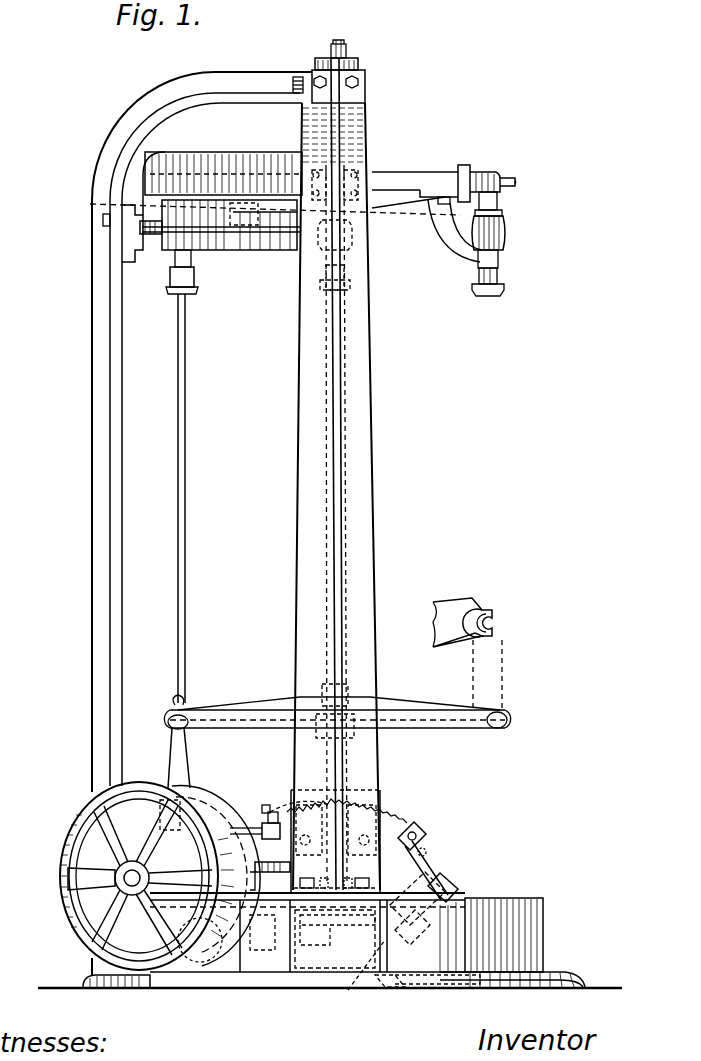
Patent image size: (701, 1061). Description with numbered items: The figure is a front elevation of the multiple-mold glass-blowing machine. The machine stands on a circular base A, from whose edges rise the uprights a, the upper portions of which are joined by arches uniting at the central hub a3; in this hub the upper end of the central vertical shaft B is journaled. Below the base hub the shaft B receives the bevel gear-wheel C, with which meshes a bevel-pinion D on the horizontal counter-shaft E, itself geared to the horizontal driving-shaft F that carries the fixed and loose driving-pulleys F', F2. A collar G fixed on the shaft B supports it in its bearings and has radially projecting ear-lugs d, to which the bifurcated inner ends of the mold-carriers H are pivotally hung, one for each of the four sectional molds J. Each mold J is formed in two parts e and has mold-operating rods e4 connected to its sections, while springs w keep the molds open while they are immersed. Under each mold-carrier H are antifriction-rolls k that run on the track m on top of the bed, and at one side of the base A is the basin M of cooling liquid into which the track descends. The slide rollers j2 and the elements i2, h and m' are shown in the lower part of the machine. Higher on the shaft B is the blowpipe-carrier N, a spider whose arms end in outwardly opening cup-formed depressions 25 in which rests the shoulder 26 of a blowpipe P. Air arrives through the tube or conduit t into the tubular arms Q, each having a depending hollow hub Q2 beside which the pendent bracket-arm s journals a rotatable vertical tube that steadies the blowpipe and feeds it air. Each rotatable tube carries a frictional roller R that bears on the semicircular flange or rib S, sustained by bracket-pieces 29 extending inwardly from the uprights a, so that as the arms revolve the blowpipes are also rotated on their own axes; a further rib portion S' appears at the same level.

The upright a is at (80, 505).
The central hub a3 is at (359, 64).
The tube or conduit t is at (347, 44).
The central vertical shaft B is at (345, 565).
The tubular arm Q is at (393, 178).
The depending hollow hub Q2 is at (110, 208).
The supporting bracket-piece 29 is at (140, 229).
The frictional roller R is at (160, 250).
The semicircular flange or rib S is at (248, 242).
The bracket slot S' is at (257, 237).
The pendent bracket-arm s is at (448, 228).
The blowpipe P is at (186, 510).
The blowpipe-carrier N is at (262, 708).
The cup-formed depression 25 is at (170, 724).
The shoulder or enlargement 26 is at (176, 703).
The horizontal driving-shaft F is at (123, 876).
The fixed driving-pulley F' is at (200, 762).
The loose driving-pulley F2 is at (208, 810).
The mold part e is at (160, 813).
The base A is at (88, 966).
The bevel gear-wheel C is at (307, 932).
The bevel-pinion D is at (335, 940).
The counter-shaft E is at (226, 939).
The collar G is at (335, 841).
The mold-carrier H is at (435, 862).
The ear-lug d is at (341, 807).
The ratchet i2 is at (276, 800).
The spring w is at (419, 849).
The pivot h is at (416, 846).
The mold-operating rod e4 is at (426, 852).
The track m is at (454, 880).
The sectional mold J is at (447, 885).
The basin M is at (513, 900).
The bracket j2 is at (270, 876).
The antifriction-roll k is at (393, 990).
The lever arm m' is at (356, 976).